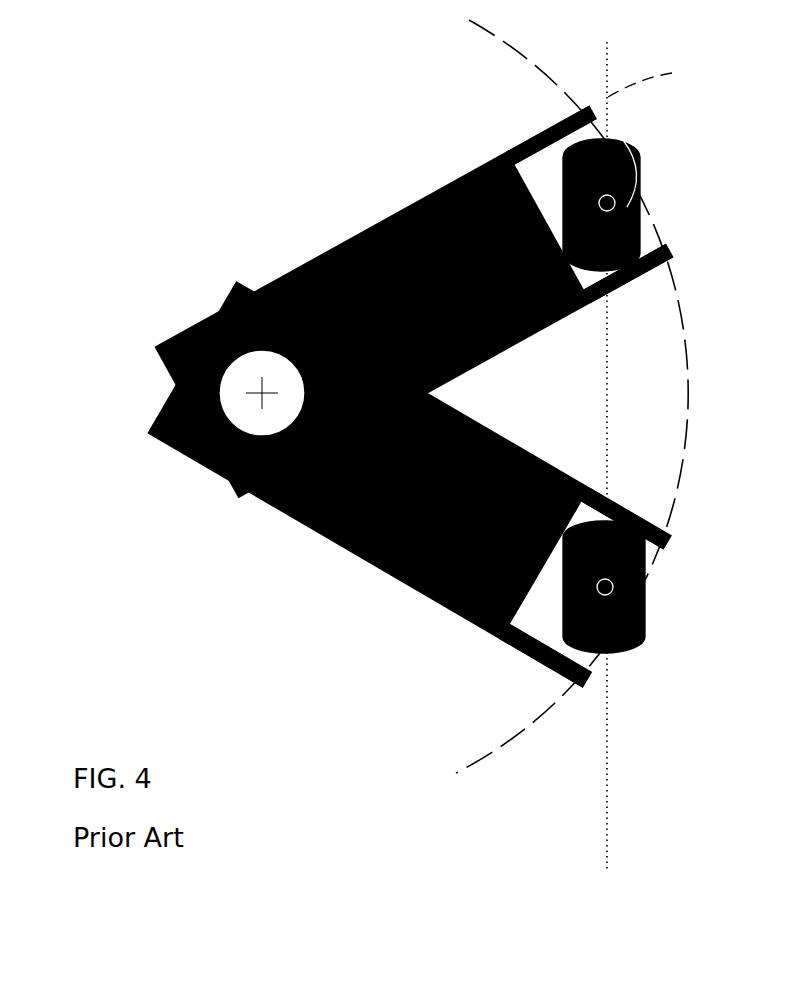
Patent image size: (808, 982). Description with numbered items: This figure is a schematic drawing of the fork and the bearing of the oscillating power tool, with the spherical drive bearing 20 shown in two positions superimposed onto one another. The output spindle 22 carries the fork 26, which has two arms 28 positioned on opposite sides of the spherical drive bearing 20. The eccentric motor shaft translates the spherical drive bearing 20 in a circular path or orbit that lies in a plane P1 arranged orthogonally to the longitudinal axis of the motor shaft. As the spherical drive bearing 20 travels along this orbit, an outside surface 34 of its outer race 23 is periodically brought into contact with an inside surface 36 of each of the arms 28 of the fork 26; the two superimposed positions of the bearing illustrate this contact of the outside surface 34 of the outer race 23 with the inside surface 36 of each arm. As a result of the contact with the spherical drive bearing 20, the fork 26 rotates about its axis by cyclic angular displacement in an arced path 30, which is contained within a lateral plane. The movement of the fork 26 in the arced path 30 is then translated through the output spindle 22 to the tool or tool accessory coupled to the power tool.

The spherical drive bearing 20 is at (627, 207).
The output spindle 22 is at (273, 378).
The outer race 23 is at (641, 153).
The fork 26 is at (436, 222).
The arms 28 is at (546, 148).
The arced path 30 is at (695, 420).
The outside surface 34 is at (632, 150).
The inside surface 36 is at (533, 173).
The plane P1 is at (654, 82).